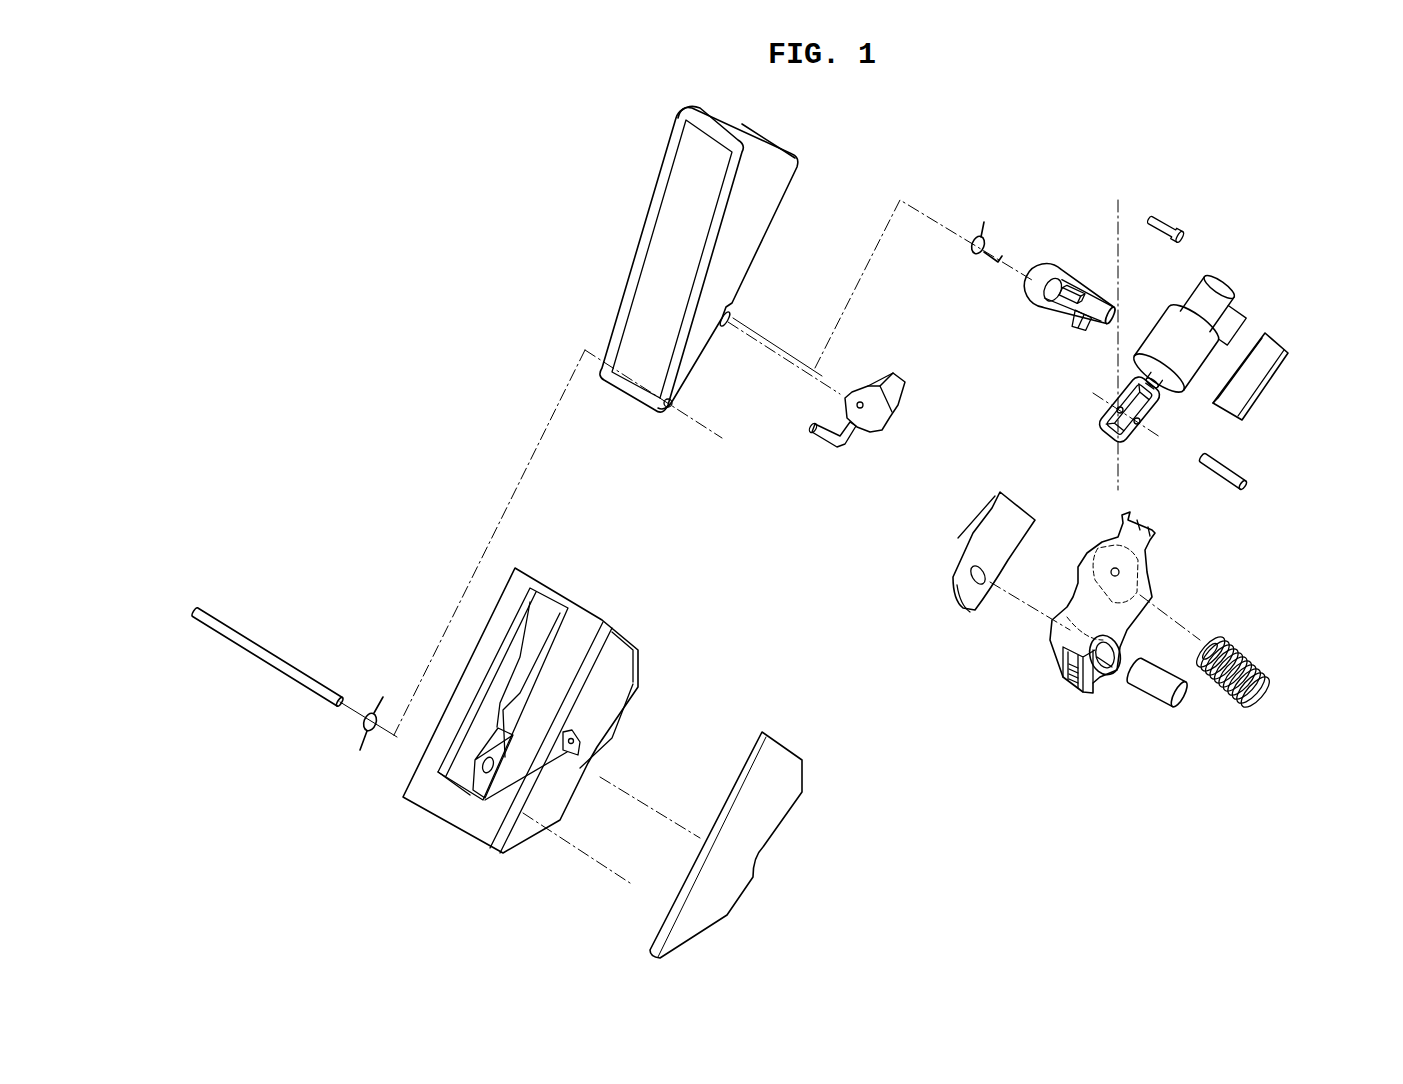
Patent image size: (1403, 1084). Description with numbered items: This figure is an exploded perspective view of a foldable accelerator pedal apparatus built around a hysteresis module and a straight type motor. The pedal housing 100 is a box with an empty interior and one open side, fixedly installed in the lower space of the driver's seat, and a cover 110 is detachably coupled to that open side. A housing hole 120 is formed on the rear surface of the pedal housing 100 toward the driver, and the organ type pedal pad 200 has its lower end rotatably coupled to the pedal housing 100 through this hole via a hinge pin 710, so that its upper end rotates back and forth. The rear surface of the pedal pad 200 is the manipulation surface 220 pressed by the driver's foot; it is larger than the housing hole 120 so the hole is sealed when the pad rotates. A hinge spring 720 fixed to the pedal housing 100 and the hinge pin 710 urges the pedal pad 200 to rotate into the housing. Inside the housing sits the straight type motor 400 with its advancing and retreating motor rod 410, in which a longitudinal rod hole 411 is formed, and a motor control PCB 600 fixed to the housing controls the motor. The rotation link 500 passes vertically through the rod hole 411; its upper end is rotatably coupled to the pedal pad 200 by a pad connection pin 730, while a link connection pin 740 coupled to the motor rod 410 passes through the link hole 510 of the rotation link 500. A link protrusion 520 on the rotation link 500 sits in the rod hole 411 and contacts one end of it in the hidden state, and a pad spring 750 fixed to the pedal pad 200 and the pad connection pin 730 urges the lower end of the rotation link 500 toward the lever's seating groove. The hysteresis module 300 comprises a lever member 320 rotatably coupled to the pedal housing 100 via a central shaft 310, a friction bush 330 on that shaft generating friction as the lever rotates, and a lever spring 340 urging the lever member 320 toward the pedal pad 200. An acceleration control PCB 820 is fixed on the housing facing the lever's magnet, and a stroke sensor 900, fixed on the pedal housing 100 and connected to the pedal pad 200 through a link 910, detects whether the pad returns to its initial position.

The pedal housing 100 is at (442, 808).
The cover 110 is at (727, 897).
The housing hole 120 is at (530, 604).
The pedal pad 200 is at (620, 262).
The manipulation surface 220 is at (672, 210).
The hysteresis module 300 is at (1062, 688).
The central shaft 310 is at (1157, 695).
The lever member 320 is at (1145, 575).
The friction bush 330 is at (1102, 682).
The lever spring 340 is at (1232, 650).
The straight type motor 400 is at (1222, 281).
The motor rod 410 is at (1102, 437).
The rod hole 411 is at (1150, 413).
The rotation link 500 is at (1062, 267).
The link hole 510 is at (1078, 297).
The link protrusion 520 is at (1075, 337).
The motor control PCB 600 is at (1270, 347).
The hinge pin 710 is at (248, 642).
The hinge spring 720 is at (362, 727).
The pad connection pin 730 is at (1165, 222).
The link connection pin 740 is at (1235, 473).
The pad spring 750 is at (973, 213).
The acceleration control PCB 820 is at (967, 598).
The stroke sensor 900 is at (874, 432).
The link 910 is at (818, 440).